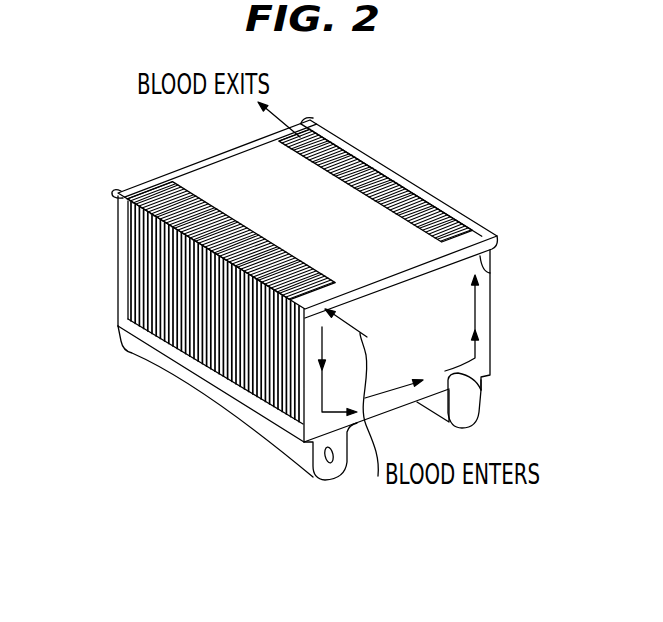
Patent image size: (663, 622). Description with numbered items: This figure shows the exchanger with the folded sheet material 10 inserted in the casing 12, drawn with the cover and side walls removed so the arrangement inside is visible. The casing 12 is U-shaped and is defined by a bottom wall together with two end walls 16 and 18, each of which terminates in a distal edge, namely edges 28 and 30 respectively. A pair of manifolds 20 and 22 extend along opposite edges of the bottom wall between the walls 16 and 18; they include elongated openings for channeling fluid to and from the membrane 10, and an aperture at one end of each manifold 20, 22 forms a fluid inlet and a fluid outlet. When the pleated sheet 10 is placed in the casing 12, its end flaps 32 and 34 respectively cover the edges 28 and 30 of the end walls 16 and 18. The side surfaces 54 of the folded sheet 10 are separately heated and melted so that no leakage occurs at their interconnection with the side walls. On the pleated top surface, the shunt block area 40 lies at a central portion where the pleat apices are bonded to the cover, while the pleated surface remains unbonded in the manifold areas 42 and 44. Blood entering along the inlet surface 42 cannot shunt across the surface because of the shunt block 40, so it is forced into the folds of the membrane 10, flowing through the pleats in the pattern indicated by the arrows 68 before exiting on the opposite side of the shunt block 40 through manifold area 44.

The folded sheet material 10 is at (488, 211).
The casing 12 is at (509, 347).
The end wall 16 is at (490, 313).
The end wall 18 is at (117, 247).
The manifold 20 is at (320, 481).
The manifold 22 is at (450, 422).
The distal edge 28 is at (490, 273).
The distal edge 30 is at (116, 197).
The end flap 32 is at (397, 280).
The end flap 34 is at (218, 159).
The shunt block 40 is at (327, 200).
The manifold area 42 is at (210, 247).
The manifold area 44 is at (416, 188).
The side surfaces 54 is at (207, 322).
The arrows 68 is at (483, 381).